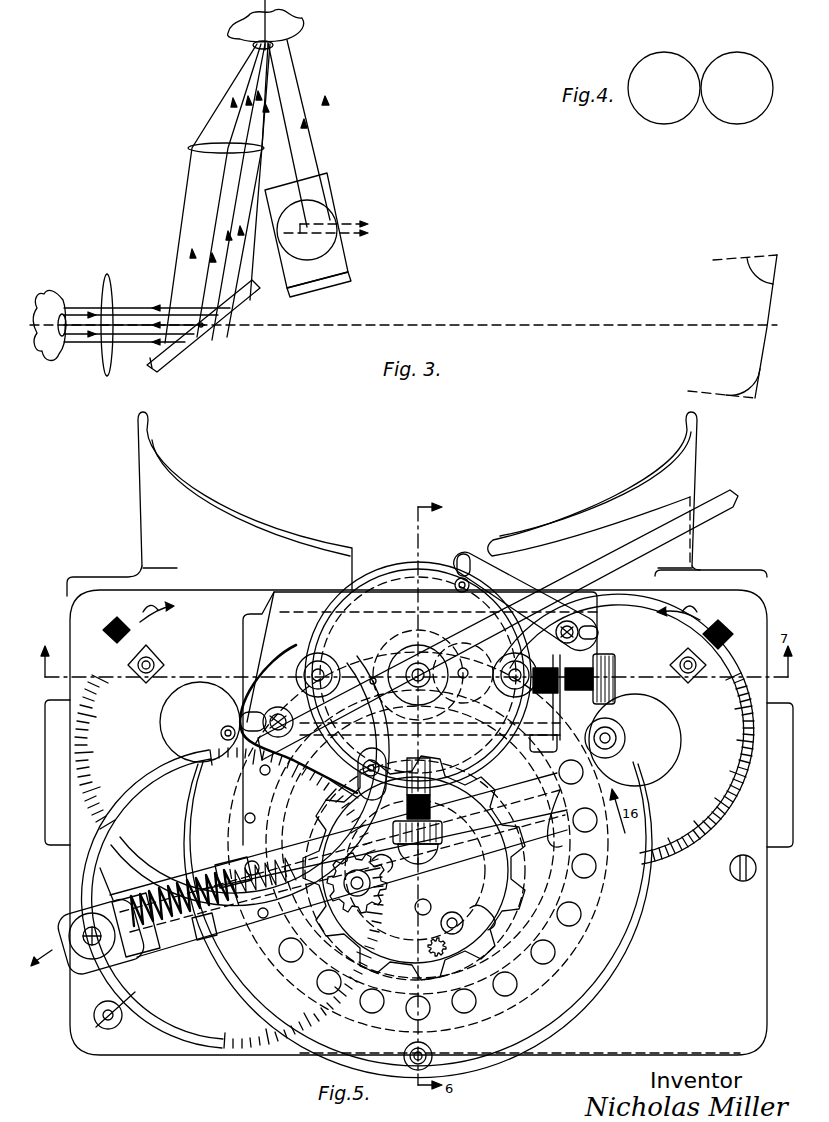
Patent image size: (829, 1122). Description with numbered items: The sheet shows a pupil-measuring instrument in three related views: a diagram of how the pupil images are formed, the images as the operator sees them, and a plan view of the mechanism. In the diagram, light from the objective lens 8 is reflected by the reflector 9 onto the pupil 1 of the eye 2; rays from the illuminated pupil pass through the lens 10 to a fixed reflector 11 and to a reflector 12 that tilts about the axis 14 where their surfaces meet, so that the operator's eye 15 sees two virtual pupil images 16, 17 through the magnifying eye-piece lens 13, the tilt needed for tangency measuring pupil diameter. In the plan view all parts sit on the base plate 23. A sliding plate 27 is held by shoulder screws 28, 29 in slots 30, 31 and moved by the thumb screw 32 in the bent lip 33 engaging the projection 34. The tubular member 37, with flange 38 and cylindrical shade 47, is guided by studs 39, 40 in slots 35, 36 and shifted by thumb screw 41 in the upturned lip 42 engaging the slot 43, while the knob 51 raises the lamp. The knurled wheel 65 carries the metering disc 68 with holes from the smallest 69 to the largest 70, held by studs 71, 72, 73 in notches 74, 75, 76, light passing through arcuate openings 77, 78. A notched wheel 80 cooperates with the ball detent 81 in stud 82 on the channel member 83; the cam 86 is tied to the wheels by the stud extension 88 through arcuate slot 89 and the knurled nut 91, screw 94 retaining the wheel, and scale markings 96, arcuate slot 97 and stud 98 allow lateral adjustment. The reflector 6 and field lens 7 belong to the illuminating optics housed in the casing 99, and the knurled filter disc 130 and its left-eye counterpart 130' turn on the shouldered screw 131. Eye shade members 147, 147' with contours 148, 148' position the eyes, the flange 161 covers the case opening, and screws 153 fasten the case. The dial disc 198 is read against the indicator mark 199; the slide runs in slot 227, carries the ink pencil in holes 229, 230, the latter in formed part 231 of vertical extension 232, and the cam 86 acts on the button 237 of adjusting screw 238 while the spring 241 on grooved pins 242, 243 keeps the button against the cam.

In FIG. 3, the pupil 1 is at (254, 47).
In FIG. 3, the observer's eye 2 is at (250, 18).
In FIG. 3, the objective lens 8 is at (332, 246).
In FIG. 3, the reflector 9 is at (282, 284).
In FIG. 3, the lens 10 is at (216, 144).
In FIG. 3, the fixed reflector 11 is at (247, 283).
In FIG. 3, the reflector 12 is at (152, 364).
In FIG. 3, the lens 13 is at (102, 356).
In FIG. 3, the axis 14 is at (201, 333).
In FIG. 3, the eye of the observer 15 is at (62, 303).
In FIG. 3, the pupil image 16 is at (746, 258).
In FIG. 4, the pupil image 16 is at (668, 124).
In FIG. 5, the pupil image 16 is at (321, 891).
In FIG. 3, the pupil image 17 is at (744, 396).
In FIG. 4, the pupil image 17 is at (724, 124).
In FIG. 5, the reflector 6 is at (434, 796).
In FIG. 5, the field lens 7 is at (414, 655).
In FIG. 5, the base plate 23 is at (172, 1055).
In FIG. 5, the sliding plate 27 is at (298, 750).
In FIG. 5, the shoulder screw 28 is at (279, 708).
In FIG. 5, the shoulder screw 29 is at (585, 620).
In FIG. 5, the slot 30 is at (243, 712).
In FIG. 5, the slot 31 is at (598, 633).
In FIG. 5, the thumb screw 32 is at (616, 664).
In FIG. 5, the upwardly bent lip 33 is at (578, 690).
In FIG. 5, the upward projection 34 is at (545, 693).
In FIG. 5, the slot 35 is at (345, 800).
In FIG. 5, the slot 36 is at (462, 553).
In FIG. 5, the tubular member 37 is at (413, 580).
In FIG. 5, the flange 38 is at (455, 562).
In FIG. 5, the shouldered stud 39 is at (362, 774).
In FIG. 5, the shouldered stud 40 is at (485, 562).
In FIG. 5, the thumb screw 41 is at (444, 836).
In FIG. 5, the upturned lip 42 is at (433, 810).
In FIG. 5, the slot 43 is at (431, 778).
In FIG. 5, the cylindrical shade 47 is at (360, 580).
In FIG. 5, the knob 51 is at (422, 660).
In FIG. 5, the knurled wheel 65 is at (592, 990).
In FIG. 5, the flexible annular disc 68 is at (645, 965).
In FIG. 5, the smallest hole 69 is at (412, 652).
In FIG. 5, the largest hole 70 is at (486, 688).
In FIG. 5, the stud 71 is at (220, 733).
In FIG. 5, the stud 72 is at (622, 735).
In FIG. 5, the stud 73 is at (411, 1052).
In FIG. 5, the notch 74 is at (248, 712).
In FIG. 5, the notch 75 is at (612, 725).
In FIG. 5, the notch 76 is at (432, 1050).
In FIG. 5, the arcuate opening 77 is at (235, 812).
In FIG. 5, the arcuate opening 78 is at (535, 985).
In FIG. 5, the notched wheel 80 is at (506, 878).
In FIG. 5, the spring actuated ball detent 81 is at (415, 870).
In FIG. 5, the stud 82 is at (548, 802).
In FIG. 5, the channel shaped member 83 is at (472, 872).
In FIG. 5, the cam 86 is at (432, 905).
In FIG. 5, the reduced extension 88 is at (378, 900).
In FIG. 5, the arcuate slot 89 is at (385, 893).
In FIG. 5, the knurled nut 91 is at (390, 866).
In FIG. 5, the screw 94 is at (440, 852).
In FIG. 5, the scale markings 96 is at (463, 926).
In FIG. 5, the arcuate slot 97 is at (490, 907).
In FIG. 5, the stud 98 is at (437, 953).
In FIG. 5, the casing 99 is at (243, 648).
In FIG. 5, the disc 130 is at (229, 754).
In FIG. 5, the right scale ring 130' is at (631, 729).
In FIG. 5, the shouldered screw 131 is at (200, 722).
In FIG. 5, the eye shade member 147 is at (226, 501).
In FIG. 5, the eye shade member 147' is at (621, 491).
In FIG. 5, the contour 148 is at (251, 498).
In FIG. 5, the contour 148' is at (595, 484).
In FIG. 5, the screw 153 is at (732, 878).
In FIG. 5, the flange or extension 161 is at (84, 560).
In FIG. 5, the dial disc 198 is at (203, 1050).
In FIG. 5, the indicator mark 199 is at (116, 1026).
In FIG. 5, the slot 227 is at (240, 930).
In FIG. 5, the hole 229 is at (70, 937).
In FIG. 5, the hole 230 is at (83, 940).
In FIG. 5, the formed part 231 is at (70, 916).
In FIG. 5, the vertical extension 232 is at (140, 960).
In FIG. 5, the anti-friction button 237 is at (305, 930).
In FIG. 5, the adjusting screw 238 is at (272, 852).
In FIG. 5, the spring 241 is at (160, 893).
In FIG. 5, the grooved pin 242 is at (226, 864).
In FIG. 5, the grooved pin 243 is at (104, 878).